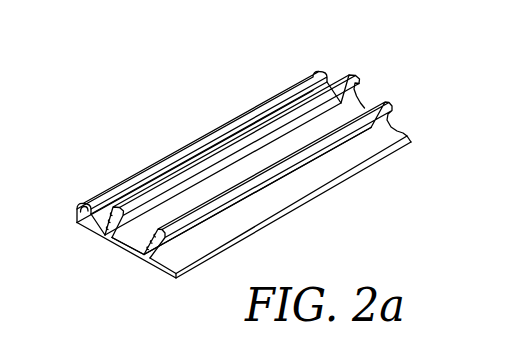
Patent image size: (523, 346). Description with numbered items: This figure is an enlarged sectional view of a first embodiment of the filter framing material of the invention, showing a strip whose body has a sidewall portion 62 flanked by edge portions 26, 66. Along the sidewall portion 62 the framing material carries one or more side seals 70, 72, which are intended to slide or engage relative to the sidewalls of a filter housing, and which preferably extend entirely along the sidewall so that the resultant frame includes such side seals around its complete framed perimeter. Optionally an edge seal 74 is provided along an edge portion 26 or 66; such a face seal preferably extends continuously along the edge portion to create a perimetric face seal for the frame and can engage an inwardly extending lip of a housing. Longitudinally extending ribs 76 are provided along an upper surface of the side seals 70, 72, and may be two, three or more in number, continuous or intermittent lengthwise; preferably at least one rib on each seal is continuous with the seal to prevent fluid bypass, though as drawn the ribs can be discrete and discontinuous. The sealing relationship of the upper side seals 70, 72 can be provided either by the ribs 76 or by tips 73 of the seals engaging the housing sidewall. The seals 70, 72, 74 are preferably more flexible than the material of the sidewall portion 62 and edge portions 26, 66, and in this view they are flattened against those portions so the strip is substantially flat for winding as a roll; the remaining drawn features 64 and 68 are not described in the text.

The edge portion 26 is at (78, 228).
The sidewall portion 62 is at (135, 237).
The side wall 64 is at (93, 231).
The edge portion 66 is at (312, 190).
The bottom edge 68 is at (160, 266).
The side seal 70 is at (353, 91).
The side seal 72 is at (384, 122).
The tip 73 is at (203, 148).
The edge seal 74 is at (310, 78).
The longitudinally extending rib 76 is at (87, 205).